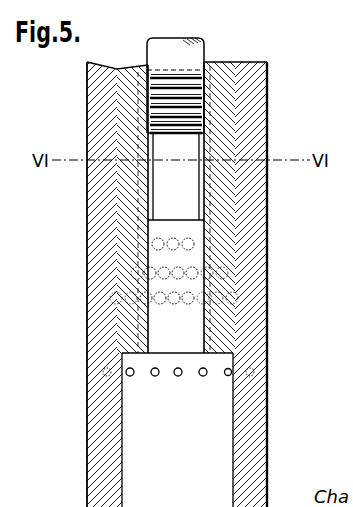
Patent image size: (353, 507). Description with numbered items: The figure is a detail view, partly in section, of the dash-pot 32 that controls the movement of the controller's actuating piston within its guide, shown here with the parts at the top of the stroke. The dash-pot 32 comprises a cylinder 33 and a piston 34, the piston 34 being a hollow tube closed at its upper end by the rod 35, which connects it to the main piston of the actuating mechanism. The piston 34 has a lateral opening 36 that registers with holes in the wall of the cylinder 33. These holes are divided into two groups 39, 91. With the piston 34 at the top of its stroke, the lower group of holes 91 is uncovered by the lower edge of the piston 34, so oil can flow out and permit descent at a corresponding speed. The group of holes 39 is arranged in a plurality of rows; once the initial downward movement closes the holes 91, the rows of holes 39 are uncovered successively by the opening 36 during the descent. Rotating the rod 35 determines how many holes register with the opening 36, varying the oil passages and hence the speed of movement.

The dash-pot 32 is at (87, 321).
The cylinder 33 is at (268, 229).
The piston 34 is at (140, 355).
The rod 35 is at (197, 57).
The lateral opening 36 is at (176, 176).
The group of holes 39 is at (122, 300).
The group of holes 91 is at (204, 376).